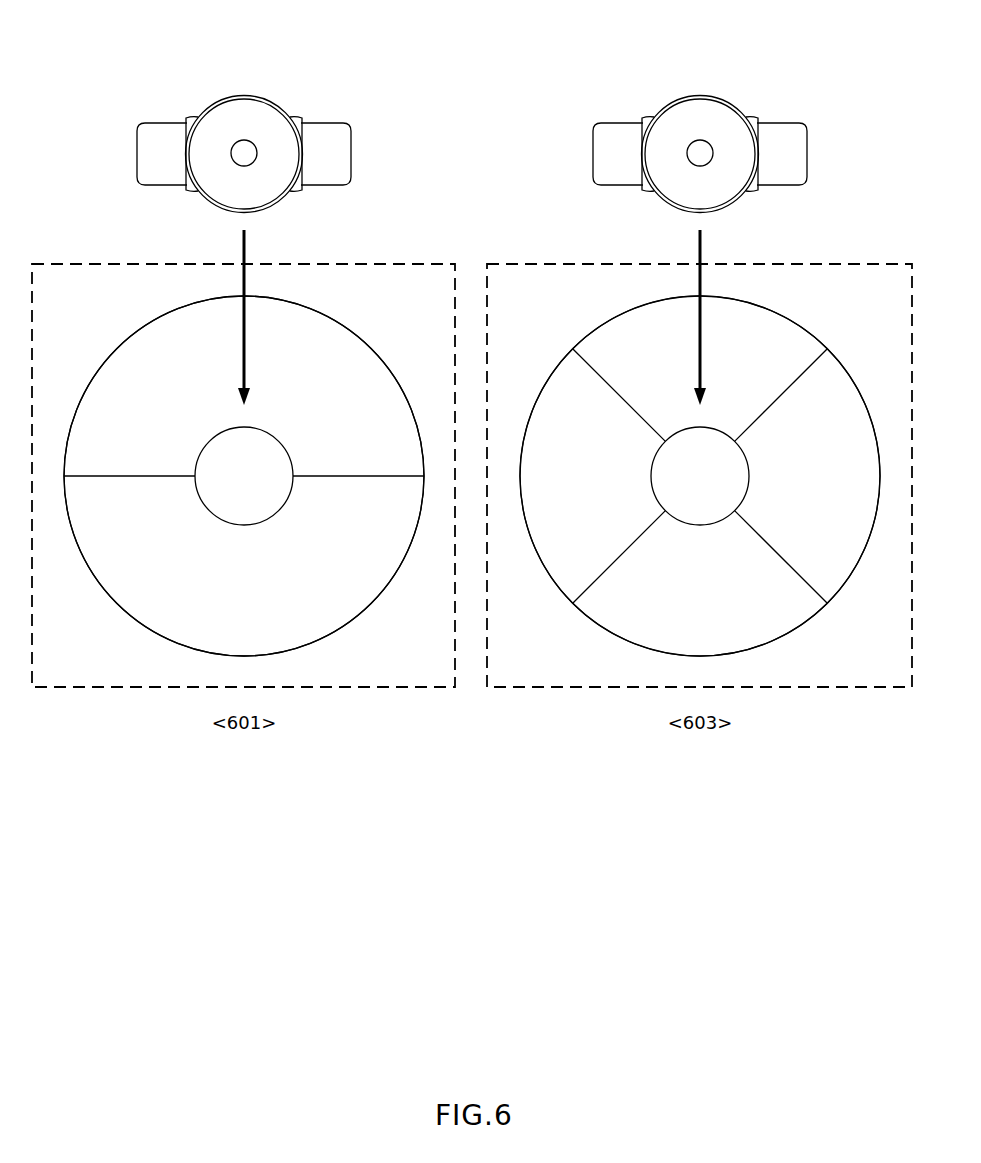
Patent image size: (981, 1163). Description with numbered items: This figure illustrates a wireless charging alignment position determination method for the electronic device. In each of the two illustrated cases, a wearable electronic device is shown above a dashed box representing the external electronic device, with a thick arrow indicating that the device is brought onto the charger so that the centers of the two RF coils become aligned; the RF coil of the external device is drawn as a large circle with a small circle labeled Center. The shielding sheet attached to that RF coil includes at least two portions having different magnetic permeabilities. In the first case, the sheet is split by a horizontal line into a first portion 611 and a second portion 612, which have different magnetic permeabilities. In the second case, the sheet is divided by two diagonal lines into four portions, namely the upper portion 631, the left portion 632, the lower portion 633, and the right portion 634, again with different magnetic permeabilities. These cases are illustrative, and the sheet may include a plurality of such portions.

The portion 1-1 611 is at (362, 380).
The portion 1-2 612 is at (362, 568).
The portion 2-1 631 is at (612, 343).
The portion 2-2 632 is at (563, 393).
The portion 2-3 633 is at (785, 600).
The portion 2-4 634 is at (845, 558).